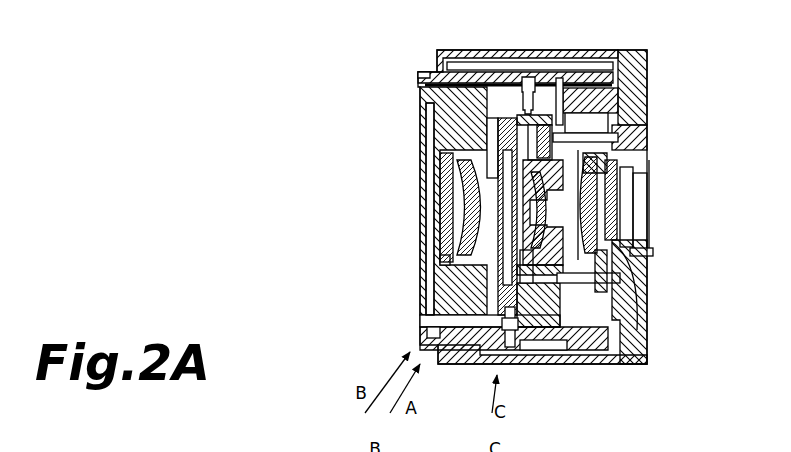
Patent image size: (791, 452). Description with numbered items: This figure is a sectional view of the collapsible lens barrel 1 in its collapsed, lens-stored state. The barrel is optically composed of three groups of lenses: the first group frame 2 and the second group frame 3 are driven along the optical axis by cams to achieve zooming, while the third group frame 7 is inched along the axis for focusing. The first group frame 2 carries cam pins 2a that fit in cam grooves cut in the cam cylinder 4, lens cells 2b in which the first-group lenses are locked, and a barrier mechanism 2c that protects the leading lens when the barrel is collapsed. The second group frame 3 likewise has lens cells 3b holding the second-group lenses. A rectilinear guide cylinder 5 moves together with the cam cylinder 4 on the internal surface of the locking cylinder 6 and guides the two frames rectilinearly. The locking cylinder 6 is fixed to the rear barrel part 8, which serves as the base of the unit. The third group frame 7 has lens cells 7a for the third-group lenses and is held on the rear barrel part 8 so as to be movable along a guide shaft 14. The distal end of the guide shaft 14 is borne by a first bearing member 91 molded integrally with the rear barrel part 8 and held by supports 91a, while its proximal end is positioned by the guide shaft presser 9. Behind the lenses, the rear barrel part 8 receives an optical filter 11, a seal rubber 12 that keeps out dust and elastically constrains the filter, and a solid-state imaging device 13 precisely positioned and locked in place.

The collapsible lens barrel 1 is at (405, 57).
The first group frame 2 is at (440, 303).
The cam pin 2a is at (526, 77).
The lens cell 2b is at (447, 263).
The barrier mechanism 2c is at (428, 228).
The second group frame 3 is at (515, 147).
The lens cell 3b is at (473, 172).
The cam cylinder 4 is at (436, 72).
The rectilinear guide cylinder 5 is at (481, 86).
The locking cylinder 6 is at (596, 52).
The third group frame 7 is at (636, 150).
The lens cell 7a is at (620, 173).
The rear barrel part 8 is at (632, 72).
The guide shaft presser 9 is at (640, 130).
The optical filter 11 is at (612, 245).
The seal rubber 12 is at (652, 253).
The solid-state imaging device 13 is at (640, 230).
The guide shaft 14 is at (642, 113).
The first bearing member 91 is at (585, 97).
The support 91a is at (562, 123).